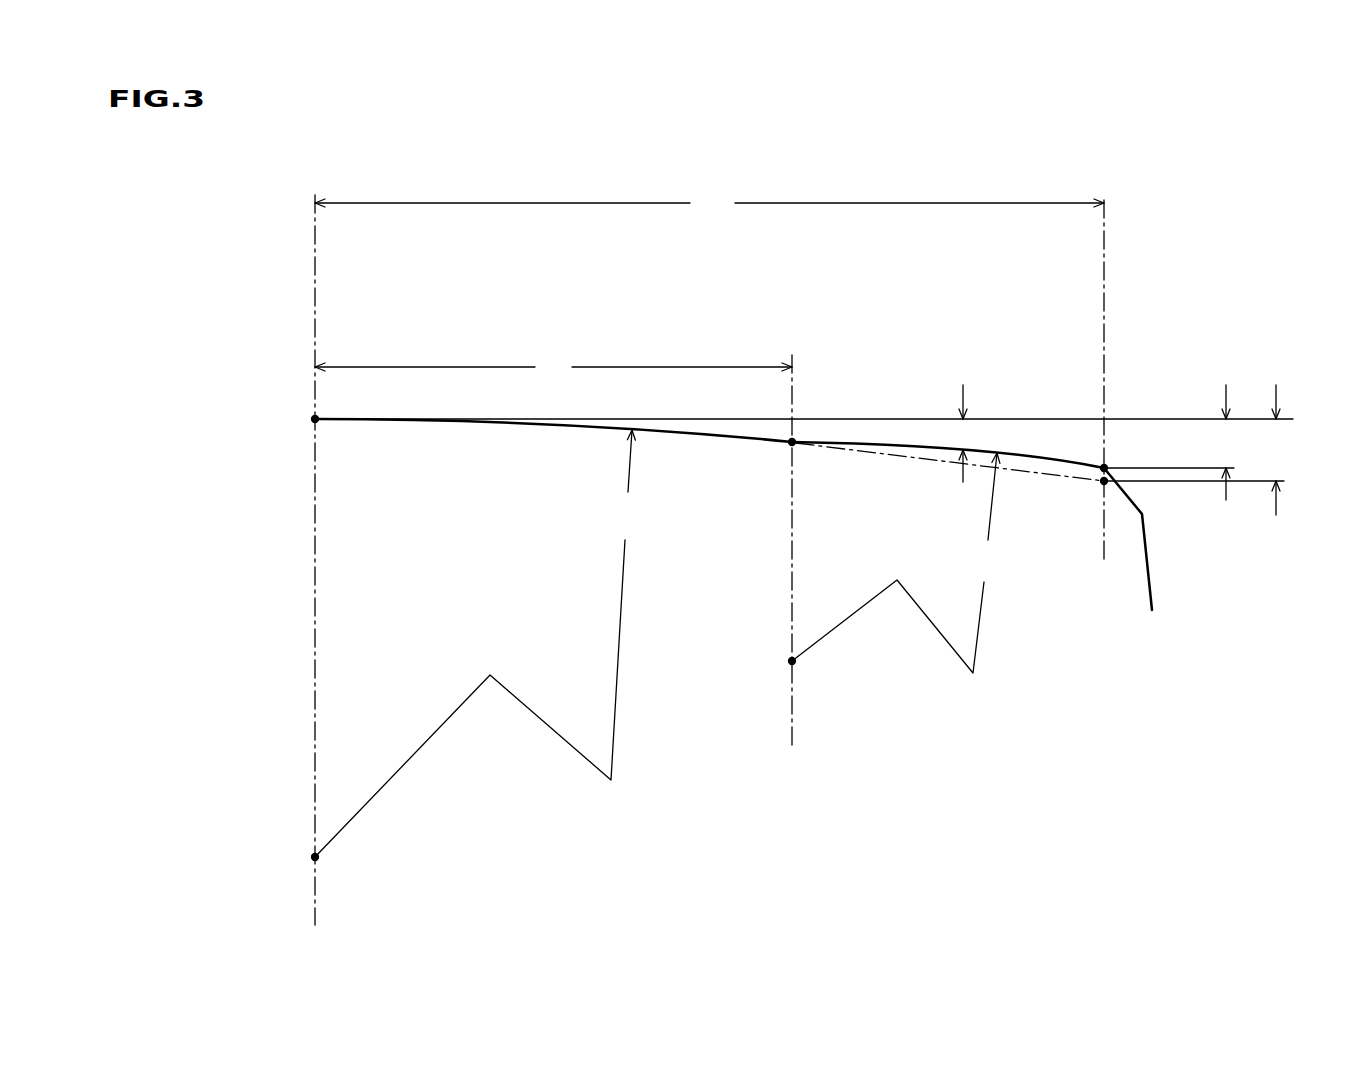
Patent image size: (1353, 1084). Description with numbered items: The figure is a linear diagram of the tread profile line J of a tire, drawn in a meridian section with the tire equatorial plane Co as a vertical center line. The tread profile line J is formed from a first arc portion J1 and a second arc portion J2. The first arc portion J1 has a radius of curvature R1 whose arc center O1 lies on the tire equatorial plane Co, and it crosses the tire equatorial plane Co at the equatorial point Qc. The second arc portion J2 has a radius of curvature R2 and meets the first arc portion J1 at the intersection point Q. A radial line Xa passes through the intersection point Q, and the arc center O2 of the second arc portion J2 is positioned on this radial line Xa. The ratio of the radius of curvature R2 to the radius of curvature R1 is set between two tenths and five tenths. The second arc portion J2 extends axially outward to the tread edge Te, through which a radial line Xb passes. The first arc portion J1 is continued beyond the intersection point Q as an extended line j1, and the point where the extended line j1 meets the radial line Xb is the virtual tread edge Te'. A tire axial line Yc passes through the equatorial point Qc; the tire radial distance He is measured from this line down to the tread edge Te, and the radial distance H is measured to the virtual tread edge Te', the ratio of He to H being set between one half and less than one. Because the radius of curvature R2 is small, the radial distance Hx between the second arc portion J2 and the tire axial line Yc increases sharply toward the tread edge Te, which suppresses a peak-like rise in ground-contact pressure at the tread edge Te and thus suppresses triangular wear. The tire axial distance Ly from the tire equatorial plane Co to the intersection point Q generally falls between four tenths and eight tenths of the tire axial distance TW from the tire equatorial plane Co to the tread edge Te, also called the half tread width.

The tire equatorial plane Co is at (315, 327).
The equatorial point Qc is at (295, 419).
The tire axial distance from the tire equatorial plane to the tread edge TW is at (709, 203).
The tire axial distance from the tire equatorial plane to the intersection point Ly is at (553, 365).
The tread profile line J is at (709, 352).
The first arc portion J1 is at (735, 436).
The second arc portion J2 is at (873, 445).
The tire axial line Yc is at (1053, 418).
The radial line passing through the intersection point Xa is at (792, 718).
The radial line passing through the tread edge Xb is at (1104, 366).
The tread edge Te is at (1139, 487).
The virtual tread edge Te' is at (1094, 560).
The radial distance between the second arc portion and the tire axial line Hx is at (979, 433).
The tire radial distance from the equatorial point to the tread edge He is at (1174, 442).
The radial distance from the equatorial point to the virtual tread edge H is at (1195, 450).
The intersection point Q is at (783, 447).
The radius of curvature of the first arc portion R1 is at (478, 643).
The radius of curvature of the second arc portion R2 is at (897, 563).
The extended line of the first arc portion j1 is at (1052, 474).
The arc center of the first arc portion O1 is at (295, 857).
The arc center of the second arc portion O2 is at (773, 661).